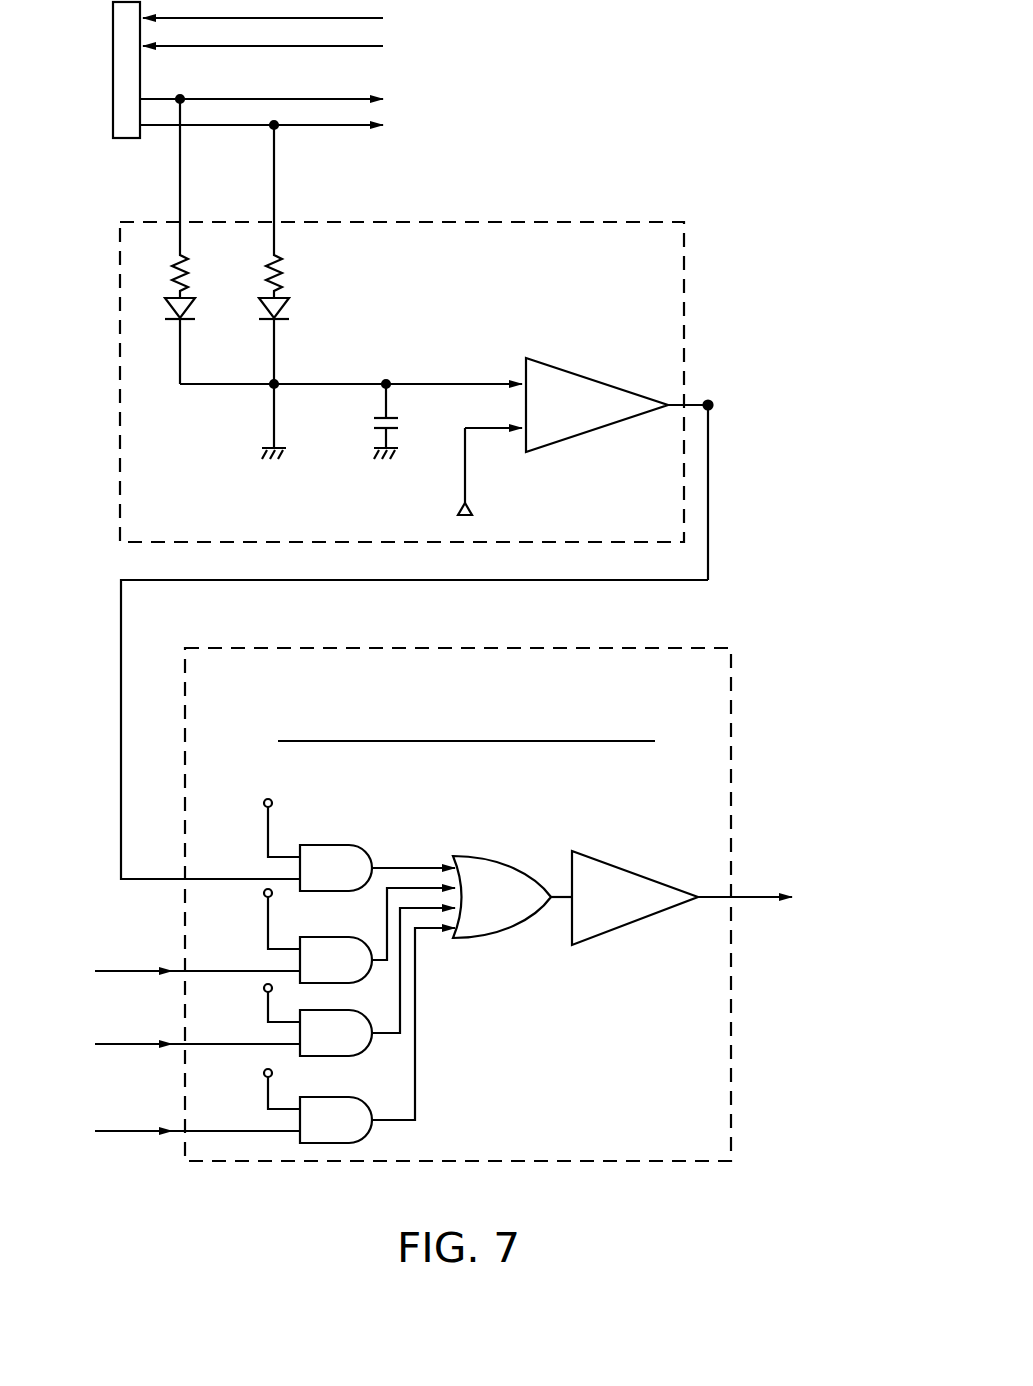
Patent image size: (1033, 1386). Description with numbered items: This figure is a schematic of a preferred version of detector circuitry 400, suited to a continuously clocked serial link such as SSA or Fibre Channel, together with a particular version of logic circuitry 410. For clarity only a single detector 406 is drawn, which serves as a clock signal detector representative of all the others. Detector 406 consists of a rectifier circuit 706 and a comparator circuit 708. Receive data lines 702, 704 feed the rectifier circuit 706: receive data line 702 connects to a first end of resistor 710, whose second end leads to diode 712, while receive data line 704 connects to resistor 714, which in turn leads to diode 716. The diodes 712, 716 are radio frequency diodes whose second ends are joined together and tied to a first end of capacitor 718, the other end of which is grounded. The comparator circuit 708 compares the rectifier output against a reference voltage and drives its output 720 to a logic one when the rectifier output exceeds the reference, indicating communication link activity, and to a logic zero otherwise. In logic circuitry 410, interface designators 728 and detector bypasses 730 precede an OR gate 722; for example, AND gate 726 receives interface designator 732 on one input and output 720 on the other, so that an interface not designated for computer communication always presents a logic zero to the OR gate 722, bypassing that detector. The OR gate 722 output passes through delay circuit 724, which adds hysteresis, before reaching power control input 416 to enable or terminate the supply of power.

The detector circuitry 400 is at (748, 146).
The detector 406 is at (538, 221).
The logic circuitry 410 is at (600, 648).
The power control input 416 is at (742, 897).
The receive data line 702 is at (303, 102).
The receive data line 704 is at (333, 128).
The rectifier circuit 706 is at (358, 272).
The comparator circuit 708 is at (568, 362).
The resistor 710 is at (188, 281).
The diode 712 is at (195, 319).
The resistor 714 is at (282, 281).
The diode 716 is at (289, 319).
The capacitor 718 is at (374, 414).
The output 720 is at (711, 402).
The OR gate 722 is at (500, 858).
The delay circuit 724 is at (600, 860).
The AND gate 726 is at (340, 845).
The interface designators 728 is at (207, 745).
The detector bypasses 730 is at (450, 1075).
The interface designator 732 is at (271, 799).